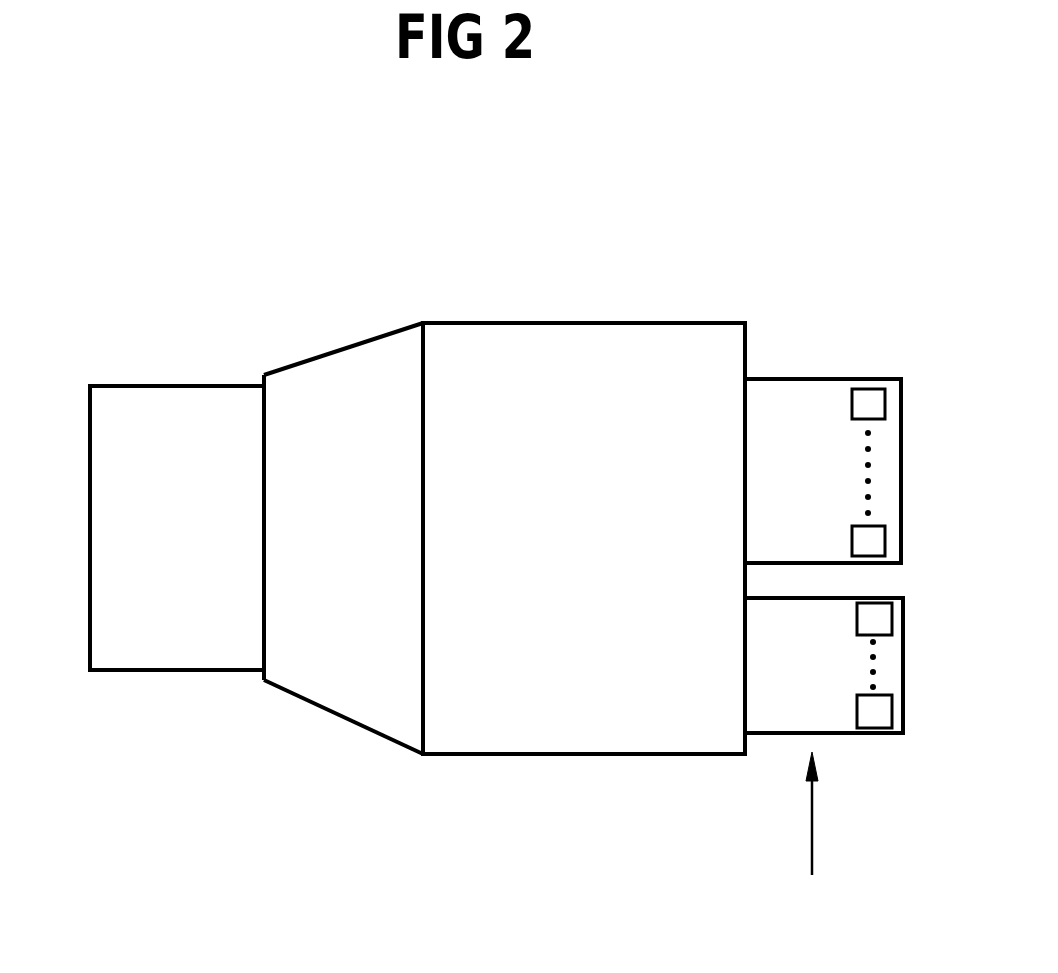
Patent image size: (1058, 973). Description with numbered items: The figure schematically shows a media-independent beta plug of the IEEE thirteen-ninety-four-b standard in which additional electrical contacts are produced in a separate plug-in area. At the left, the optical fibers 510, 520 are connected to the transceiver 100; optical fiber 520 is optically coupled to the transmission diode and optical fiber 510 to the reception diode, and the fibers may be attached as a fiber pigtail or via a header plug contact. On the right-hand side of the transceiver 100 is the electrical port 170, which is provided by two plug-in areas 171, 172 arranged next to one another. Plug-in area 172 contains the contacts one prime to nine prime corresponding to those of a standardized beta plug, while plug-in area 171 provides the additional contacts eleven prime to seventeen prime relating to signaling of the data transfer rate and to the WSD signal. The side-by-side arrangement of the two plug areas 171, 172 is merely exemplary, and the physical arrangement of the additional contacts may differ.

The transceiver 100 is at (537, 755).
The electrical port 170 is at (817, 837).
The plug-in area 171 is at (843, 733).
The plug-in area 172 is at (830, 379).
The optical fiber 510 is at (163, 614).
The optical fiber 520 is at (164, 637).